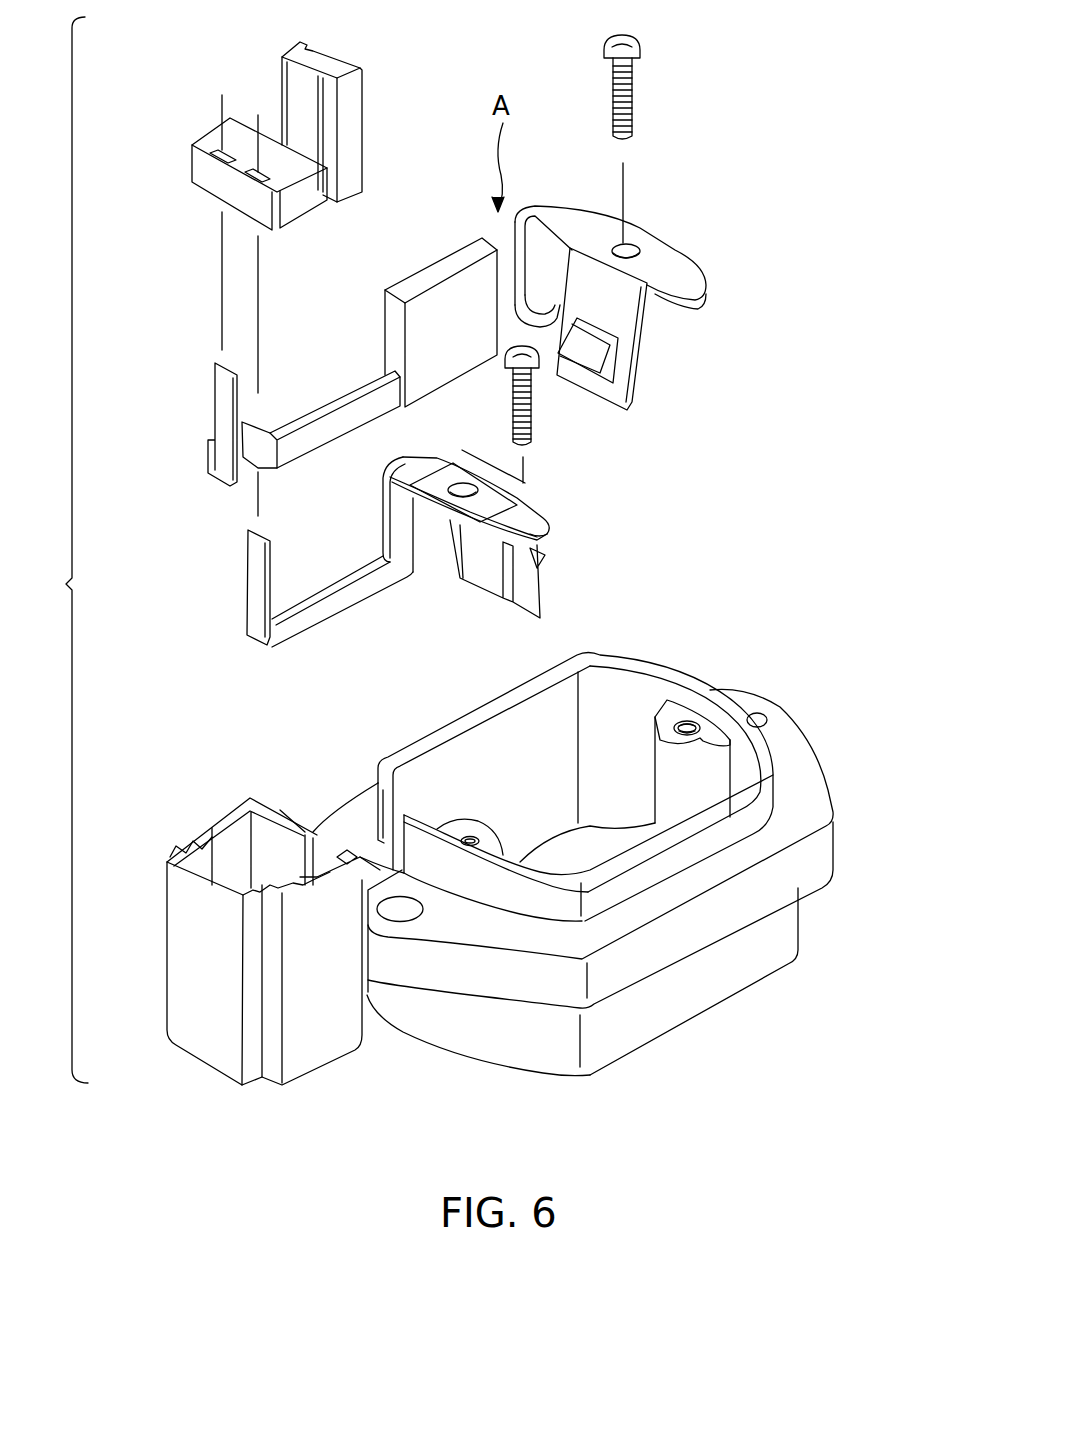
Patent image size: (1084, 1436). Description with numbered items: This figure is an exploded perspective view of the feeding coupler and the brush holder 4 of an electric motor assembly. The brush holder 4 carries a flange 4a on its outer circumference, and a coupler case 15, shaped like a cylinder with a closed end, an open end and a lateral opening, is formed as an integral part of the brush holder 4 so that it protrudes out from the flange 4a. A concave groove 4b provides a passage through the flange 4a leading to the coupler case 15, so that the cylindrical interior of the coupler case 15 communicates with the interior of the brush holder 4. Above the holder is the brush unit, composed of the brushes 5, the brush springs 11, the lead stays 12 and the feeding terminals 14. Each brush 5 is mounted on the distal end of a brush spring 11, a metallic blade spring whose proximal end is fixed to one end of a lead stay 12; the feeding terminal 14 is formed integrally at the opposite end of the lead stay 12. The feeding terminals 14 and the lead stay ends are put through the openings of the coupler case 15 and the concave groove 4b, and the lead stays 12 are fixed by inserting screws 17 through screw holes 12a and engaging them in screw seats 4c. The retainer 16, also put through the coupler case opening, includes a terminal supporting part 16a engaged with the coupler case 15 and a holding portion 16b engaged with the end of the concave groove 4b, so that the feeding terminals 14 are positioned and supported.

The brush holder 4 is at (610, 861).
The flange 4a is at (797, 770).
The concave groove 4b is at (376, 857).
The screw seat 4c is at (705, 740).
The brush 5 is at (588, 357).
The brush spring 11 is at (644, 287).
The lead stay 12 is at (340, 395).
The screw hole 12a is at (634, 245).
The feeding terminal 14 is at (225, 417).
The coupler case 15 is at (187, 918).
The retainer 16 is at (253, 266).
The terminal supporting part 16a is at (207, 138).
The holding portion 16b is at (324, 70).
The screw 17 is at (634, 52).